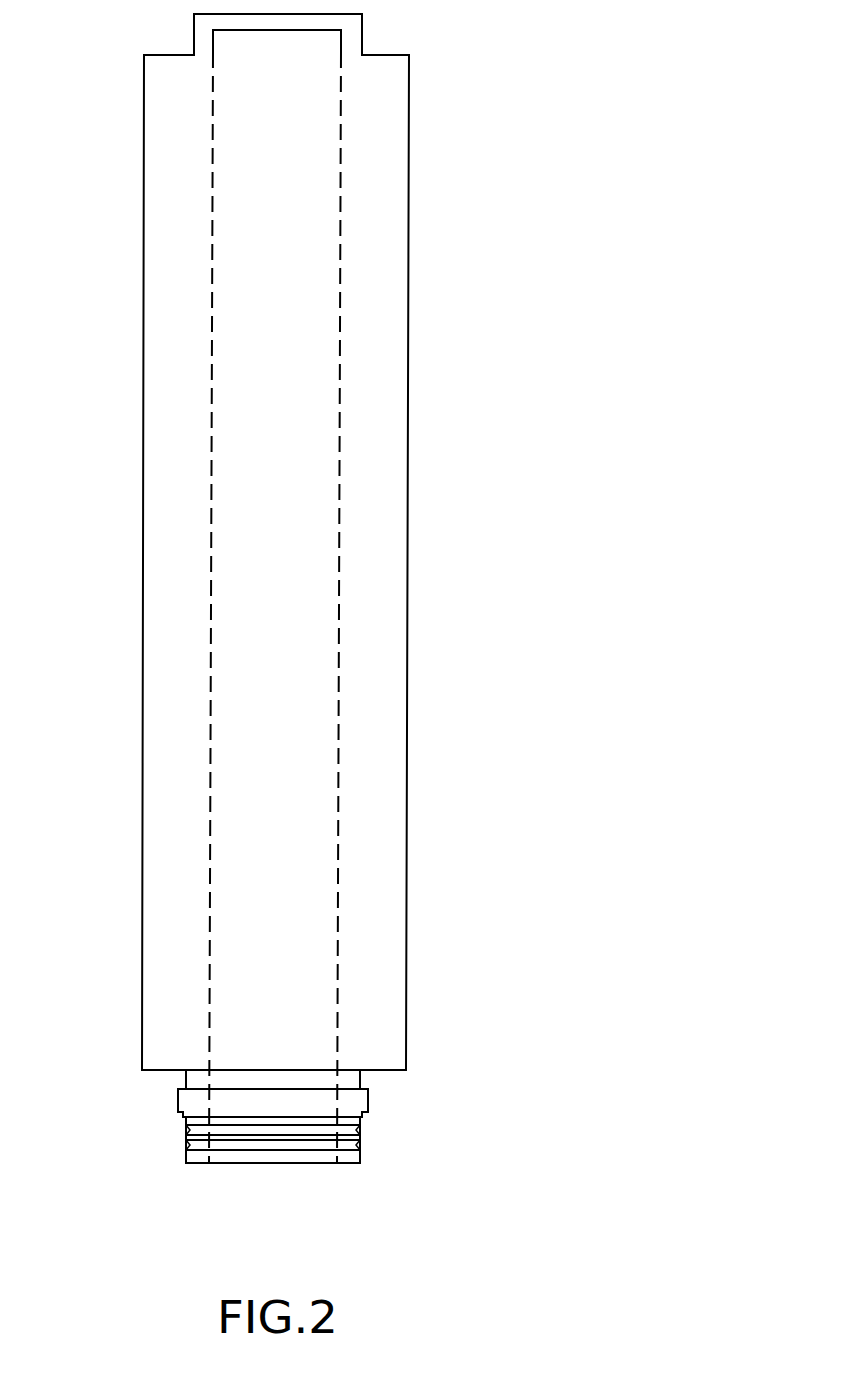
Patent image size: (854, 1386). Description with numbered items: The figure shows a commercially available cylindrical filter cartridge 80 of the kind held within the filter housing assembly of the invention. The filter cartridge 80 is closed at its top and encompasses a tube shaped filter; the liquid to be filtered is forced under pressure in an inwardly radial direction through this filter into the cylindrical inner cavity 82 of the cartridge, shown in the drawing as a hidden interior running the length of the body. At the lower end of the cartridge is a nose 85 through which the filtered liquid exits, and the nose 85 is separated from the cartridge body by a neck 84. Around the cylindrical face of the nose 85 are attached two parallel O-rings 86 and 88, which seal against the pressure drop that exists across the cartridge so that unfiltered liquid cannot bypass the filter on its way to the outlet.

The filter cartridge 80 is at (388, 670).
The inner cavity 82 is at (282, 524).
The neck 84 is at (348, 1081).
The nose 85 is at (273, 1155).
The O-ring 86 is at (188, 1130).
The O-ring 88 is at (188, 1147).